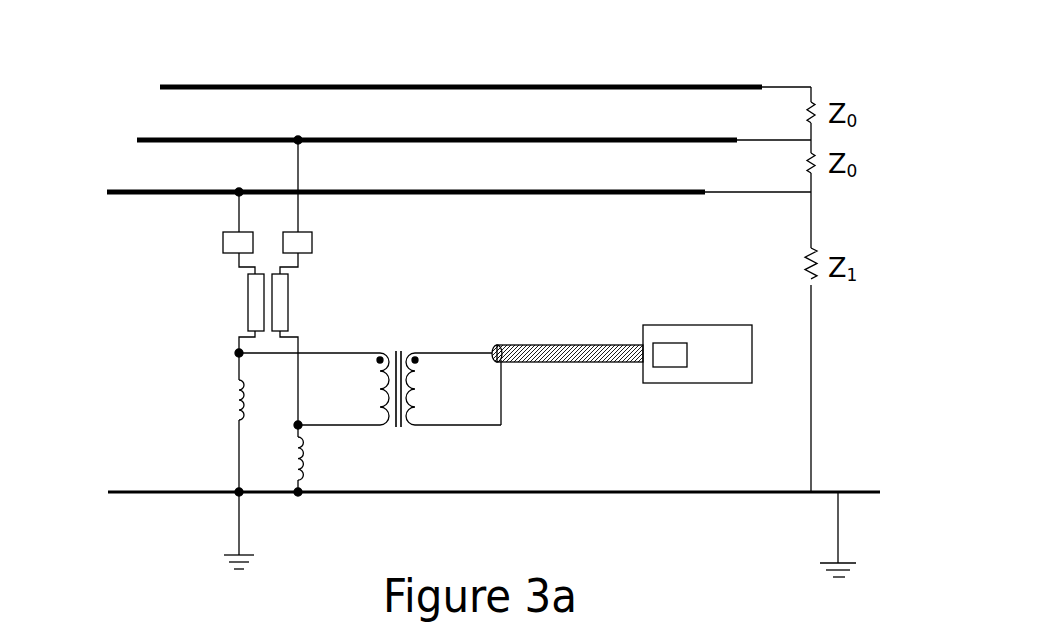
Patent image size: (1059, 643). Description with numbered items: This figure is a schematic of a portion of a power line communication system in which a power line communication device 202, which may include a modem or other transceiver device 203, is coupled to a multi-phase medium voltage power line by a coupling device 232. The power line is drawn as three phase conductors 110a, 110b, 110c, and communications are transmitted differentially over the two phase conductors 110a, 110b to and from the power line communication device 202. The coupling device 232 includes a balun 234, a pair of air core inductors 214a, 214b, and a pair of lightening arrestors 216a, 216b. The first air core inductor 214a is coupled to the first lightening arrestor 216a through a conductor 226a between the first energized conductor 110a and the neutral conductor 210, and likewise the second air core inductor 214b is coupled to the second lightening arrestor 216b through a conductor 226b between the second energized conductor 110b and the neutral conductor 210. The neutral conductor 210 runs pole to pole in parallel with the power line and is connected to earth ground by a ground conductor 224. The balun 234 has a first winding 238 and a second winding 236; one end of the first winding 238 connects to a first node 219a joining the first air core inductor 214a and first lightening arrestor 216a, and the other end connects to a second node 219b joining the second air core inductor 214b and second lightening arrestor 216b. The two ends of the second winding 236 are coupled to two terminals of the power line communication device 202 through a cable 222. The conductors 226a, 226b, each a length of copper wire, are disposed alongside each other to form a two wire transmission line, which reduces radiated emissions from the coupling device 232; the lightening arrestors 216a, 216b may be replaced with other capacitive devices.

The first energized conductor 110a is at (445, 190).
The second energized conductor 110b is at (408, 138).
The power line phase conductor 110c is at (375, 85).
The power line communication device 202 is at (665, 325).
The transceiver device 203 is at (660, 367).
The neutral conductor 210 is at (583, 492).
The first air core inductor 214a is at (237, 385).
The second air core inductor 214b is at (303, 478).
The first lightening arrestor 216a is at (233, 232).
The second lightening arrestor 216b is at (310, 232).
The first node 219a is at (239, 353).
The second node 219b is at (301, 428).
The cable 222 is at (537, 345).
The ground conductor 224 is at (239, 520).
The conductor 226a is at (247, 302).
The conductor 226b is at (288, 297).
The coupling device 232 is at (373, 367).
The balun 234 is at (407, 427).
The second winding 236 is at (415, 352).
The first winding 238 is at (383, 355).